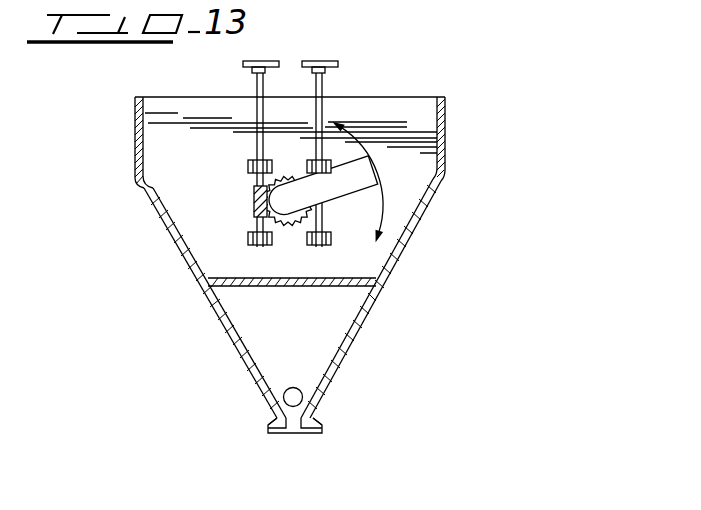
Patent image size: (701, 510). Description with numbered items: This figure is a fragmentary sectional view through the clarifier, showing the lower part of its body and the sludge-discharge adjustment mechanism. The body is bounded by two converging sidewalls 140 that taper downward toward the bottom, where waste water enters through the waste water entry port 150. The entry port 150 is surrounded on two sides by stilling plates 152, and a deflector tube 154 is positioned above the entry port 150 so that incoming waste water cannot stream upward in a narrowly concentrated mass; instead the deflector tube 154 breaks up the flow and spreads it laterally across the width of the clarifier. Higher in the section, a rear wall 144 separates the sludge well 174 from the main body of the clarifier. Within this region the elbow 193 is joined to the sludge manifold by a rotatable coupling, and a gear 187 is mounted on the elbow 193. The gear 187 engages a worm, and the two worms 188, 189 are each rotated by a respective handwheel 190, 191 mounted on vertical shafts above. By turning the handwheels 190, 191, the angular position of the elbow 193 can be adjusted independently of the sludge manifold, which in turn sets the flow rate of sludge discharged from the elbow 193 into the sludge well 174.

The converging sidewalls 140 is at (206, 306).
The rear wall 144 is at (210, 160).
The waste water entry port 150 is at (295, 441).
The stilling plates 152 is at (275, 424).
The deflector tube 154 is at (294, 387).
The sludge well 174 is at (192, 227).
The gear 187 is at (281, 176).
The worm 188 is at (323, 213).
The worm 189 is at (253, 202).
The handwheel 190 is at (340, 63).
The handwheel 191 is at (243, 65).
The elbow 193 is at (372, 180).